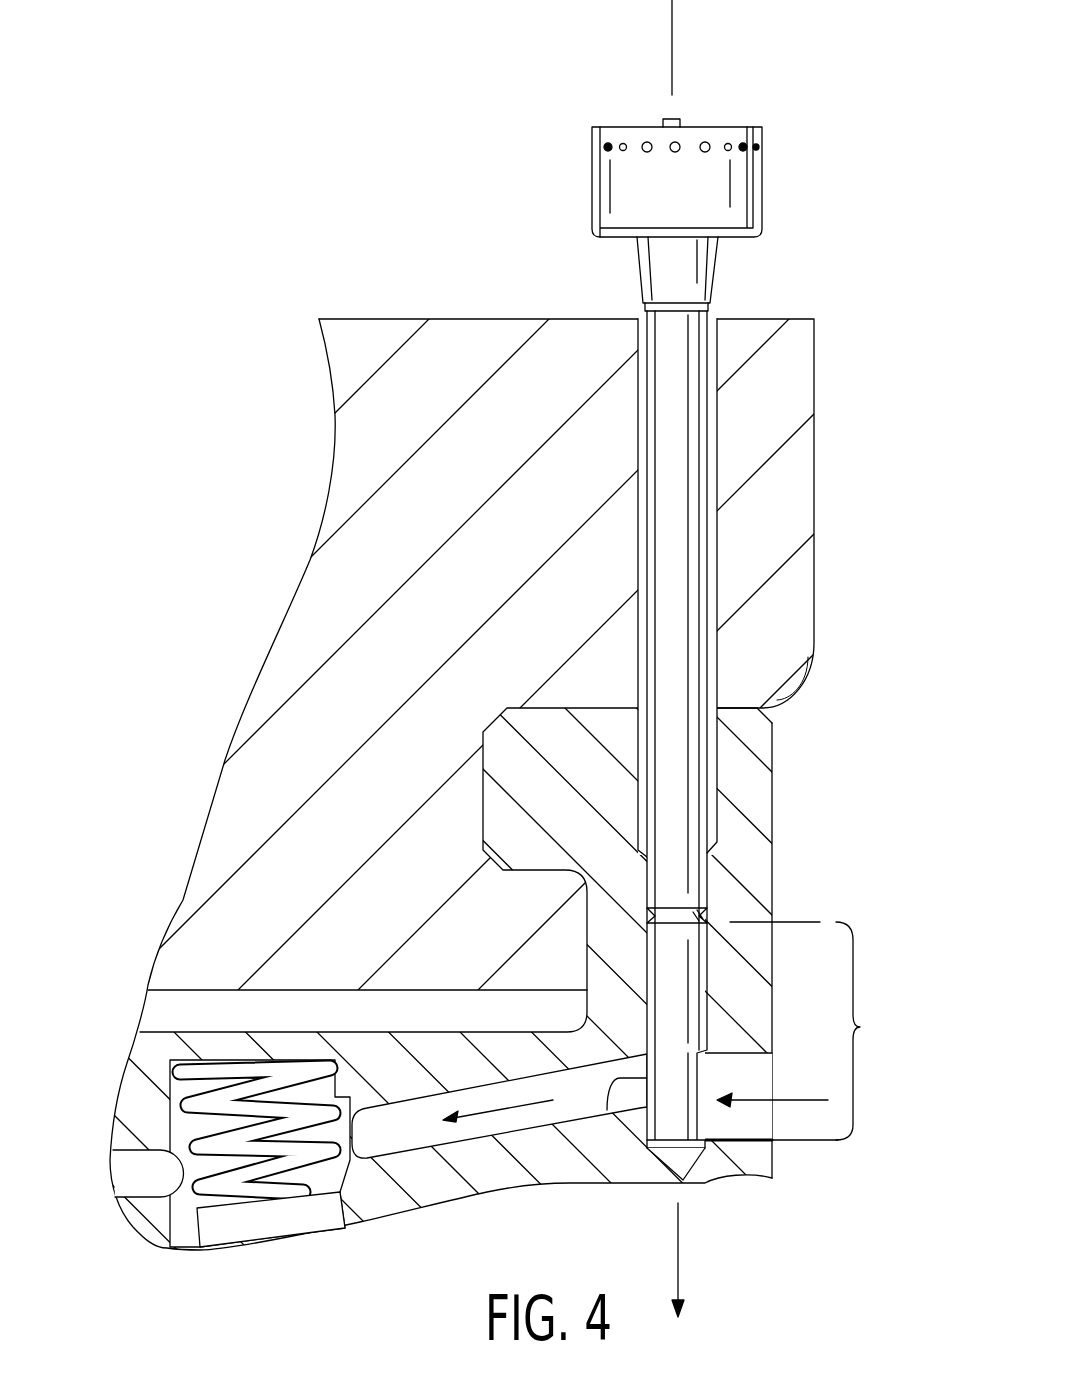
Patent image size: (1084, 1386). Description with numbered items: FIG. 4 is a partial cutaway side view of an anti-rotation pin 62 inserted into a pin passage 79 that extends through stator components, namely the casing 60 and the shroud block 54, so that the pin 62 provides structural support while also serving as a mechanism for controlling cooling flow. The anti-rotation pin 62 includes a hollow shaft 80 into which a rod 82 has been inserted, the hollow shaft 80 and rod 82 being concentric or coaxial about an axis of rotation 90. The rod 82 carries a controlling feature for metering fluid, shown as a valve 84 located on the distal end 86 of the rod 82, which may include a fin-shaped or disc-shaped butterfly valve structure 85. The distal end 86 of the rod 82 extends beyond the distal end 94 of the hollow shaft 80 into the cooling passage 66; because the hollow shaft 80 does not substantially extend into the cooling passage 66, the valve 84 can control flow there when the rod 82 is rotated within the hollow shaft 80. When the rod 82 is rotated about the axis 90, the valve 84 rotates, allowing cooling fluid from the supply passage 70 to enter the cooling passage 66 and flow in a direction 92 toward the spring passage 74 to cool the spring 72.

The shroud block 54 is at (814, 582).
The casing 60 is at (495, 333).
The anti-rotation pin 62 is at (727, 308).
The cooling passage 66 is at (433, 1207).
The supply passage 70 is at (772, 1082).
The spring 72 is at (195, 1053).
The spring passage 74 is at (172, 1100).
The pin passage 79 is at (717, 530).
The hollow shaft 80 is at (717, 764).
The rod 82 is at (708, 978).
The valve 84 is at (617, 1113).
The butterfly valve structure 85 is at (687, 1110).
The distal end of the rod 86 is at (860, 1027).
The axis of rotation 90 is at (672, 35).
The flow direction 92 is at (790, 1100).
The distal end of the hollow shaft 94 is at (710, 892).